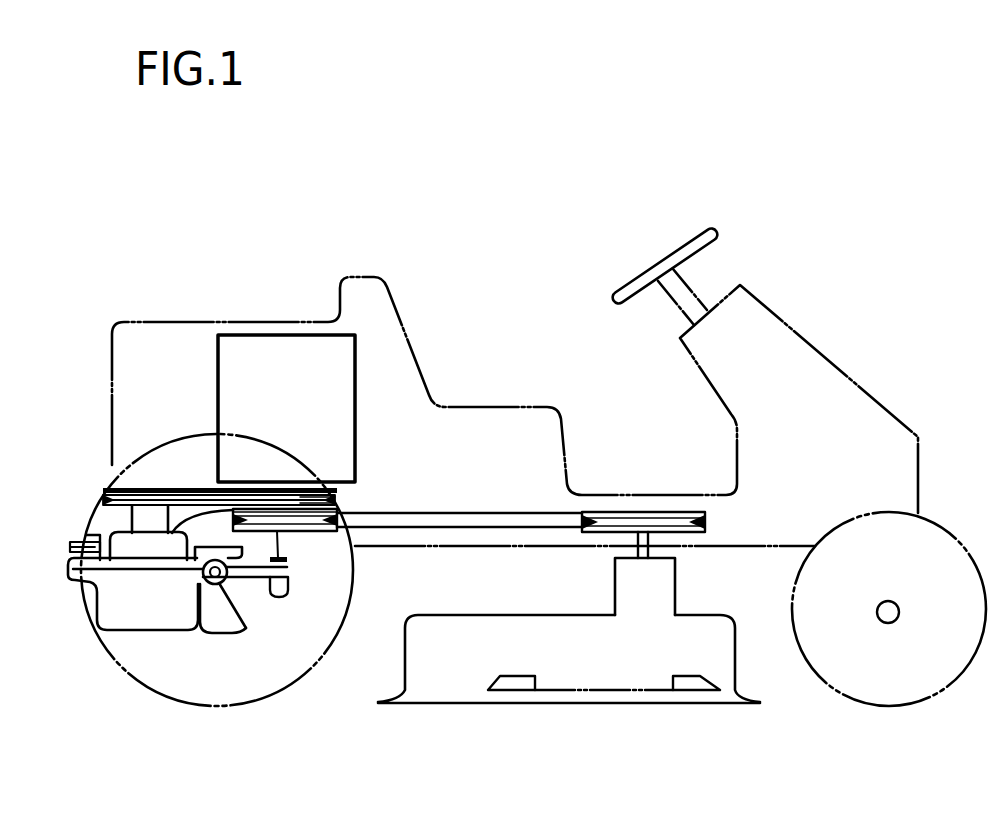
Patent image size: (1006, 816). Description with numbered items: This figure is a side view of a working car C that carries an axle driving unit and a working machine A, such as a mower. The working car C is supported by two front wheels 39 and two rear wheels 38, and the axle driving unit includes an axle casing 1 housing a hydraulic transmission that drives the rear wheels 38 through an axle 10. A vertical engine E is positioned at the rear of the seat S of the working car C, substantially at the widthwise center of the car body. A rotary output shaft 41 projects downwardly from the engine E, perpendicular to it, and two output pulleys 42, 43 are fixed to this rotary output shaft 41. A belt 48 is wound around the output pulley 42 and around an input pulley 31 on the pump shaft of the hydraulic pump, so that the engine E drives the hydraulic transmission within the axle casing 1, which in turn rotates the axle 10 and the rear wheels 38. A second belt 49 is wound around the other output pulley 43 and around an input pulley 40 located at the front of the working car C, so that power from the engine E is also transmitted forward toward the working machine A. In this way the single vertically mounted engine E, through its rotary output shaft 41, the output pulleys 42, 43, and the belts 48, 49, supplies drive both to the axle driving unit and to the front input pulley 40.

The axle casing 1 is at (140, 633).
The axle 10 is at (246, 628).
The input pulley 31 is at (135, 492).
The rear wheel 38 is at (226, 703).
The front wheel 39 is at (895, 703).
The input pulley 40 is at (632, 512).
The rotary output shaft 41 is at (302, 486).
The output pulley 42 is at (333, 488).
The output pulley 43 is at (305, 532).
The belt 48 is at (205, 482).
The belt 49 is at (530, 513).
The working machine A is at (425, 667).
The working car C is at (254, 275).
The engine E is at (294, 421).
The seat S is at (402, 311).